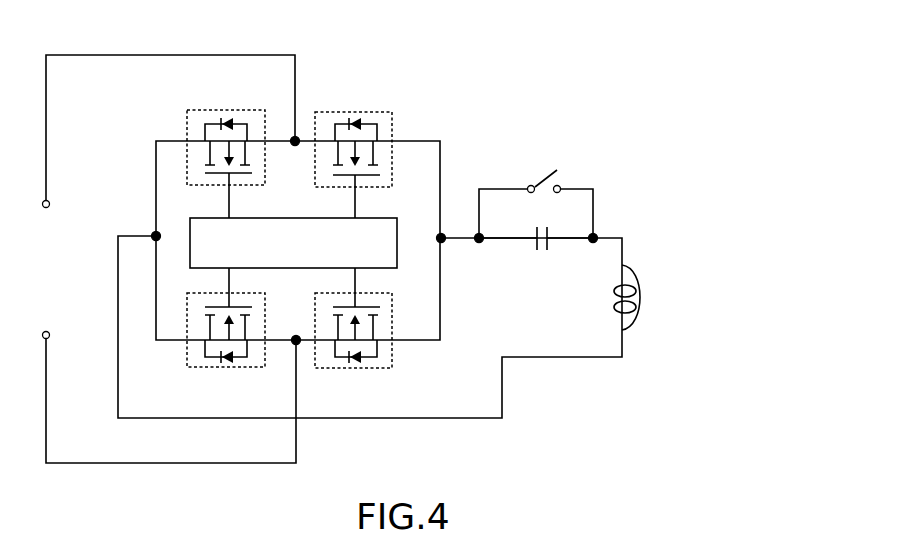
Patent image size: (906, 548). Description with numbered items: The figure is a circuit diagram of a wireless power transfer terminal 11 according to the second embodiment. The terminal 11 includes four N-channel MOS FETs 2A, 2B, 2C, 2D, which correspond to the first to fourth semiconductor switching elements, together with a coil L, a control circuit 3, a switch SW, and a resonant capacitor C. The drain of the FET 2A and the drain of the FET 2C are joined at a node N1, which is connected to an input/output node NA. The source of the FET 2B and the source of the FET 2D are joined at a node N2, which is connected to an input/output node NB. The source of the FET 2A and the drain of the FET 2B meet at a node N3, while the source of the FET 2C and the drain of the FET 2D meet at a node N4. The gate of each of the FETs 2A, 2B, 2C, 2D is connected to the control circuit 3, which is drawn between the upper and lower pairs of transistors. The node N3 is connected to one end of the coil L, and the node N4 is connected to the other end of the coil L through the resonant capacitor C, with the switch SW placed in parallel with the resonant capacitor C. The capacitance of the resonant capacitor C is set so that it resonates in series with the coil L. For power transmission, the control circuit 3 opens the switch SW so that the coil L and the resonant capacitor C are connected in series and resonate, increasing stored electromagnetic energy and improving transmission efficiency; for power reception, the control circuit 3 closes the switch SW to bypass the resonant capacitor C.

The wireless power transfer terminal 11 is at (517, 83).
The FET 2A is at (188, 110).
The FET 2B is at (188, 367).
The FET 2C is at (392, 112).
The FET 2D is at (392, 368).
The control circuit 3 is at (397, 222).
The switch SW is at (536, 191).
The resonant capacitor C is at (536, 253).
The coil L is at (614, 297).
The node N1 is at (292, 151).
The node N2 is at (292, 329).
The node N3 is at (144, 246).
The node N4 is at (429, 243).
The input/output node NA is at (33, 207).
The input/output node NB is at (33, 338).